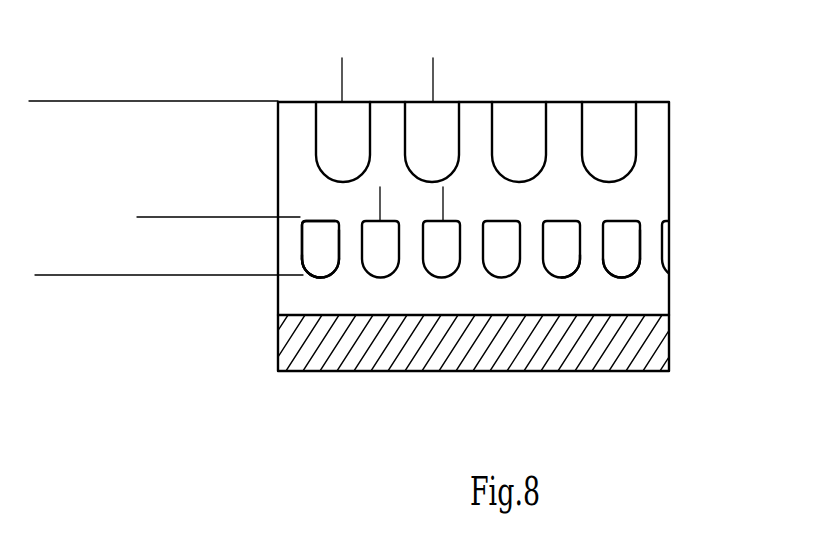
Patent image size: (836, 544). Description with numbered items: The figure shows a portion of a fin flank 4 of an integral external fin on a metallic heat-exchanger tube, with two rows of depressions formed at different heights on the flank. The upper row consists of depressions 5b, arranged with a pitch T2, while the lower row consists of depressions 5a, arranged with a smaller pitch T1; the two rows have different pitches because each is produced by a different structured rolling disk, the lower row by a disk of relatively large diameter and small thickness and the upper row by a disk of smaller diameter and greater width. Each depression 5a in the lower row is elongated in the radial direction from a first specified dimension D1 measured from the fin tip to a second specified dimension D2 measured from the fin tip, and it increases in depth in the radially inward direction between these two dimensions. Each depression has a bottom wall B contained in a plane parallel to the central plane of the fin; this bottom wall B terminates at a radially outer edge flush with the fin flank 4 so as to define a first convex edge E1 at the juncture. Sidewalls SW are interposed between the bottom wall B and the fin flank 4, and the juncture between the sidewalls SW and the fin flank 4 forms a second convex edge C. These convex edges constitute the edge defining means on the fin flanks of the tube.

The fin flank 4 is at (300, 180).
The depressions of the lower row 5a is at (555, 221).
The depressions of the upper row 5b is at (610, 122).
The bottom wall B is at (315, 250).
The second convex edge C is at (322, 277).
The sidewalls SW is at (326, 270).
The first convex edge E1 is at (327, 218).
The pitch of the lower row of depressions T1 is at (343, 197).
The pitch of the upper row of depressions T2 is at (307, 67).
The first specified dimension D1 is at (150, 101).
The second specified dimension D2 is at (52, 101).